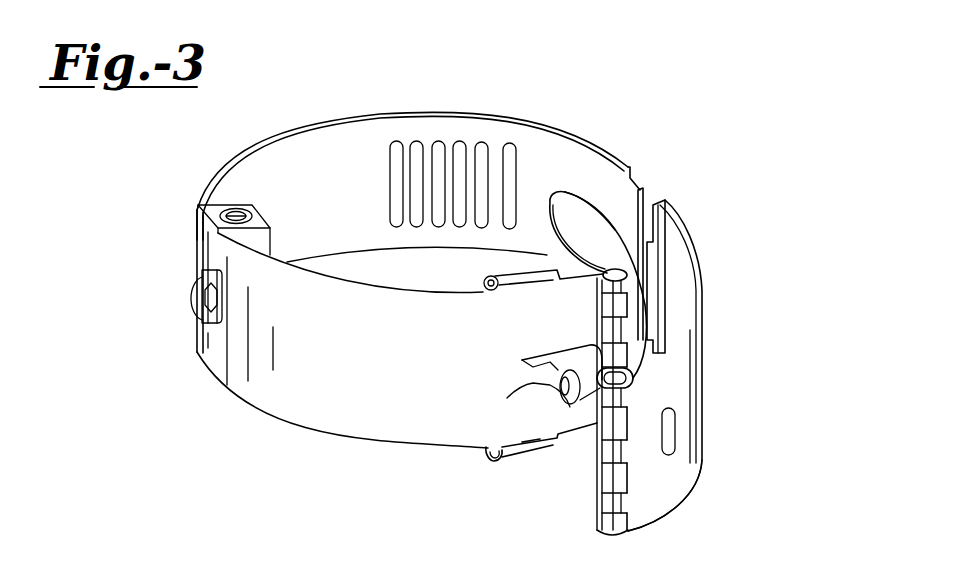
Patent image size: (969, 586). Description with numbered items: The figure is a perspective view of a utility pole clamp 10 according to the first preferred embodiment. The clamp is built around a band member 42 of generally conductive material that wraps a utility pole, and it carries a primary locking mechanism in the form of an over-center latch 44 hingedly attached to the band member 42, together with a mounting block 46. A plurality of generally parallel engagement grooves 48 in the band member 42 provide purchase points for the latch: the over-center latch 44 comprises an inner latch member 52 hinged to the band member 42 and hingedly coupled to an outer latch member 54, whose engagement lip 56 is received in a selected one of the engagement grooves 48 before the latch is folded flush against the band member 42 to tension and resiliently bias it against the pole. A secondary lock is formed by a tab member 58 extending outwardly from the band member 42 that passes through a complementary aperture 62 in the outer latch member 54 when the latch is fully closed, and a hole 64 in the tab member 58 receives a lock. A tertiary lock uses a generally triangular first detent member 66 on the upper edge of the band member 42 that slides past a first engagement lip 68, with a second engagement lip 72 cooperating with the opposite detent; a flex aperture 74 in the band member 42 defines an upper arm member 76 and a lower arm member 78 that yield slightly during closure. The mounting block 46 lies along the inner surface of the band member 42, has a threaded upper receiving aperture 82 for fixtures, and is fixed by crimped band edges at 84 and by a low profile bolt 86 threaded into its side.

The utility pole clamp 10 is at (706, 185).
The band member 42 is at (352, 372).
The over-center latch 44 is at (719, 406).
The mounting block 46 is at (245, 183).
The engagement grooves 48 is at (418, 142).
The inner latch member 52 is at (621, 364).
The outer latch member 54 is at (702, 343).
The engagement lip 56 is at (657, 263).
The tab member 58 is at (527, 387).
The complementary aperture 62 is at (670, 455).
The hole 64 is at (563, 372).
The first detent member 66 is at (632, 165).
The first engagement lip 68 is at (493, 276).
The second engagement lip 72 is at (527, 453).
The flex aperture 74 is at (589, 205).
The upper arm member 76 is at (630, 216).
The lower arm member 78 is at (546, 254).
The upper receiving aperture 82 is at (250, 206).
The crimped portions 84 is at (197, 208).
The low profile bolt 86 is at (190, 293).